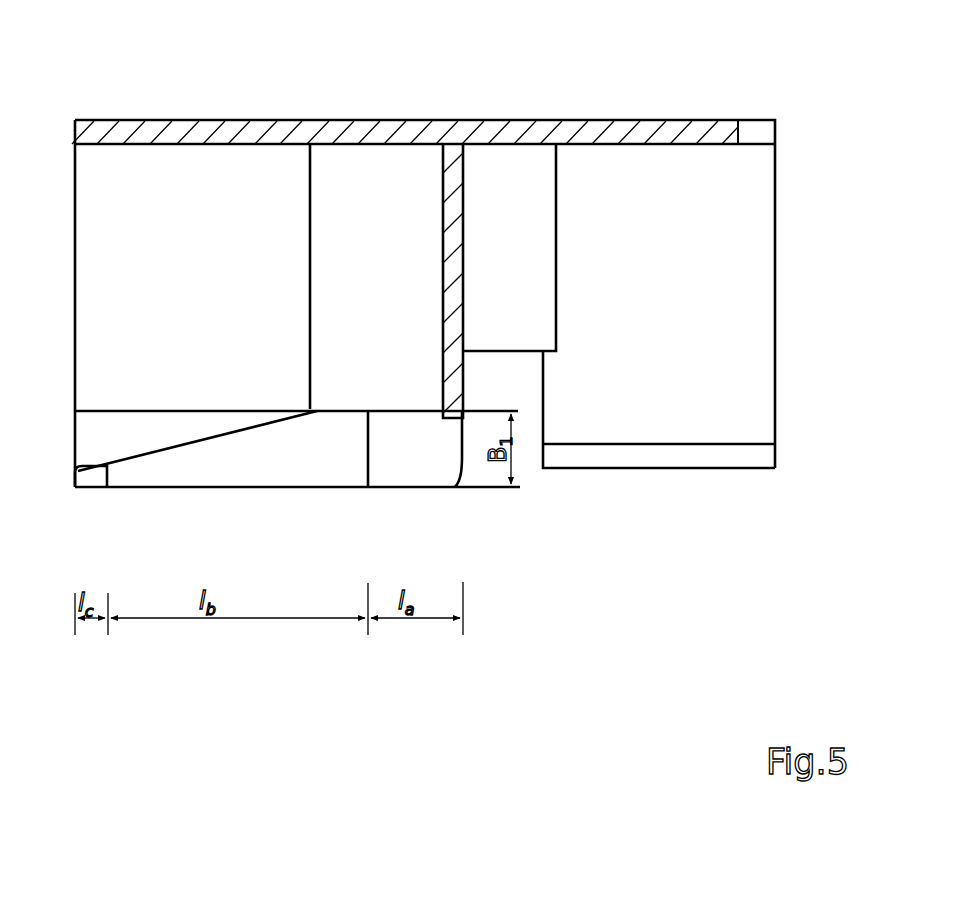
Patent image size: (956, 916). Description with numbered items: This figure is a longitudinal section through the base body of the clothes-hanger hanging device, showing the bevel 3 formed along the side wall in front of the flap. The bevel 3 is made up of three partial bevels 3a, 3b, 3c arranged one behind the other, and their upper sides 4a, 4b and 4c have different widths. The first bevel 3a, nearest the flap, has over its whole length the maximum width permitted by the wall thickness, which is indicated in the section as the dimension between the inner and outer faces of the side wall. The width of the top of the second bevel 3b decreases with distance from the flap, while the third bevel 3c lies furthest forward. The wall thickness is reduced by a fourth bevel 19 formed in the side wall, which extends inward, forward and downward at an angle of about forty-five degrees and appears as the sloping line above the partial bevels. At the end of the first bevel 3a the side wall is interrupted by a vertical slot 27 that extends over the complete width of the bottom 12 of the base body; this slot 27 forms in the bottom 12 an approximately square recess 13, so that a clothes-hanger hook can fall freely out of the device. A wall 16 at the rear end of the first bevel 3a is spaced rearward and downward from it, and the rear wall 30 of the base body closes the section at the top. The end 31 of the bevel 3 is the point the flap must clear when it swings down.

The bevel 3 is at (330, 468).
The first bevel 3a is at (425, 490).
The second bevel 3b is at (260, 490).
The third bevel 3c is at (93, 490).
The upper side of first bevel 4a is at (432, 468).
The upper side of second bevel 4b is at (250, 458).
The upper side of third bevel 4c is at (95, 467).
The bottom 12 is at (208, 265).
The recess 13 is at (388, 347).
The wall 16 is at (450, 260).
The fourth bevel 19 is at (168, 427).
The vertical slot 27 is at (530, 437).
The rear wall 30 is at (746, 127).
The end of bevel 31 is at (464, 449).